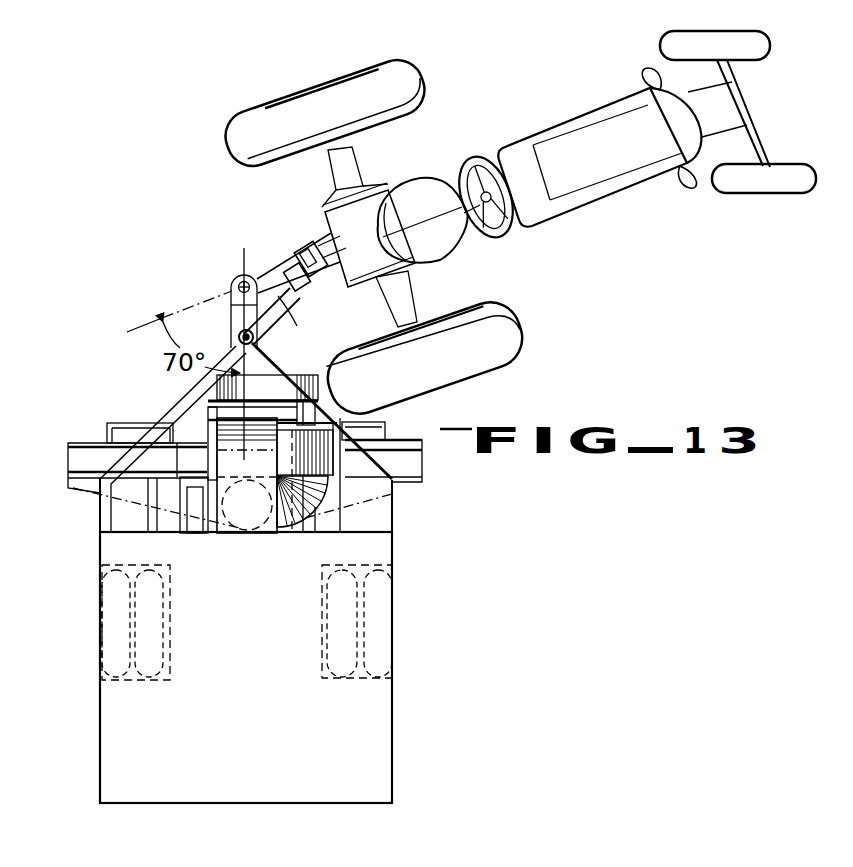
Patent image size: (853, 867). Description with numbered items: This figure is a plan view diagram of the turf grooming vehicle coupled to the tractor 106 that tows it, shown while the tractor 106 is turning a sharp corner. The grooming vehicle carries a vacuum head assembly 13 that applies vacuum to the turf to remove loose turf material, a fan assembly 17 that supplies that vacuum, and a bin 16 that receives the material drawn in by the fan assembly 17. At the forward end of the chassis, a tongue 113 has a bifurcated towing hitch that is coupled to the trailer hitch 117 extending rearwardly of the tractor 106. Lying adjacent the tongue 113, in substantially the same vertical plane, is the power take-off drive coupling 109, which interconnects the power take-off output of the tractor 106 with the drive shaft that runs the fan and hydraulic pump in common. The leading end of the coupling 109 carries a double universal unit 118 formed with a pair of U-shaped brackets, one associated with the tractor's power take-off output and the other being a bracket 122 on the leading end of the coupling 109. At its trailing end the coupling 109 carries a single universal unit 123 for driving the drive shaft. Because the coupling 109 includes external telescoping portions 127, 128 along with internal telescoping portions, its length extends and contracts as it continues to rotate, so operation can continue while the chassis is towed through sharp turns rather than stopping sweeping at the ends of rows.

The tractor 106 is at (556, 121).
The power take-off drive coupling 109 is at (217, 317).
The tongue 113 is at (232, 312).
The trailer hitch 117 is at (272, 268).
The double universal unit 118 is at (318, 284).
The bracket 122 is at (292, 255).
The single universal unit 123 is at (226, 343).
The external telescoping portion 127 is at (288, 300).
The external telescoping portion 128 is at (280, 297).
The vacuum head assembly 13 is at (78, 494).
The bin 16 is at (413, 715).
The fan assembly 17 is at (338, 494).